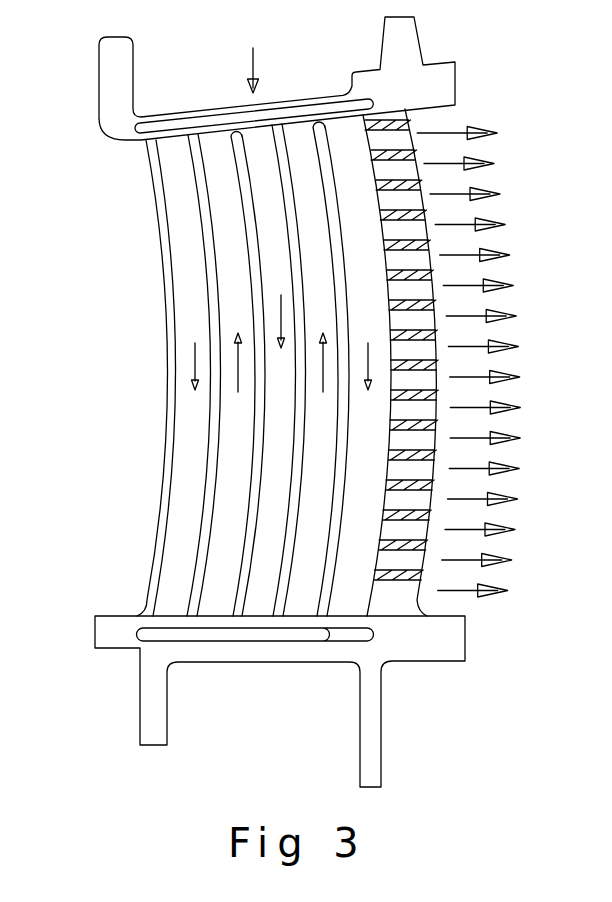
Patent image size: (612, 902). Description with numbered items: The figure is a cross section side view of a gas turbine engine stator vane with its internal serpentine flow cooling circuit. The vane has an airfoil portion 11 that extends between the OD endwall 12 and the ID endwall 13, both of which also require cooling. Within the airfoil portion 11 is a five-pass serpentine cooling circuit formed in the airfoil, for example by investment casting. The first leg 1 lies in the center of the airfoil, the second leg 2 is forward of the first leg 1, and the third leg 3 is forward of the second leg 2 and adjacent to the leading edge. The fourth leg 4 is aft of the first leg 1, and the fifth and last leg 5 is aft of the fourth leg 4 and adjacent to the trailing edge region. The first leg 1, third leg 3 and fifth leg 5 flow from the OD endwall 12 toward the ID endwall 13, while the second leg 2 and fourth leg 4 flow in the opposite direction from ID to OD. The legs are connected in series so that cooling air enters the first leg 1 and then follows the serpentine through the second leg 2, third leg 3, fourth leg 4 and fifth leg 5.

The airfoil portion 11 is at (110, 353).
The OD endwall 12 is at (428, 83).
The ID endwall 13 is at (443, 638).
The first leg 1 is at (280, 304).
The second leg 2 is at (240, 344).
The third leg 3 is at (195, 343).
The fourth leg 4 is at (323, 344).
The fifth leg 5 is at (368, 343).